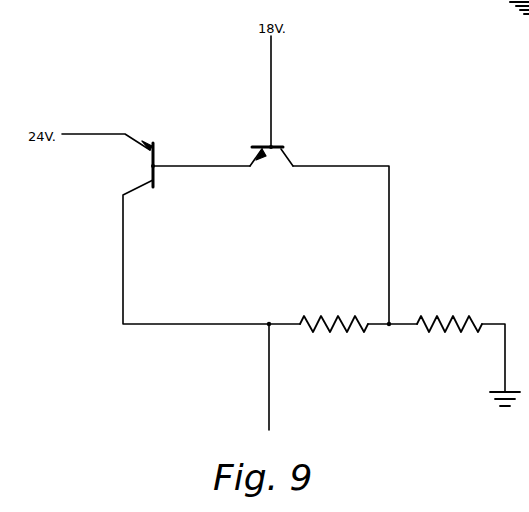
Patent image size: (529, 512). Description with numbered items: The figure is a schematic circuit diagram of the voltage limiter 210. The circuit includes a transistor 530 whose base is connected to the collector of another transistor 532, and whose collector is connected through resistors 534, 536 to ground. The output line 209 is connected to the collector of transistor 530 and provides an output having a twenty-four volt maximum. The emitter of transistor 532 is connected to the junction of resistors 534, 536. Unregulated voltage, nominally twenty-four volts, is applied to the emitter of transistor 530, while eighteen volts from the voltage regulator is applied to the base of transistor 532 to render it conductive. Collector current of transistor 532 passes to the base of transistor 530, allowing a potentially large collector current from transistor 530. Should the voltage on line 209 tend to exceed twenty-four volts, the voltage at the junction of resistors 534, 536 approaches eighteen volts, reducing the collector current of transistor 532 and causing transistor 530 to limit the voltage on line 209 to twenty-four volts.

The output line 209 is at (269, 408).
The voltage limiter 210 is at (203, 346).
The transistor 530 is at (156, 160).
The transistor 532 is at (275, 145).
The resistor 534 is at (326, 317).
The resistor 536 is at (440, 315).